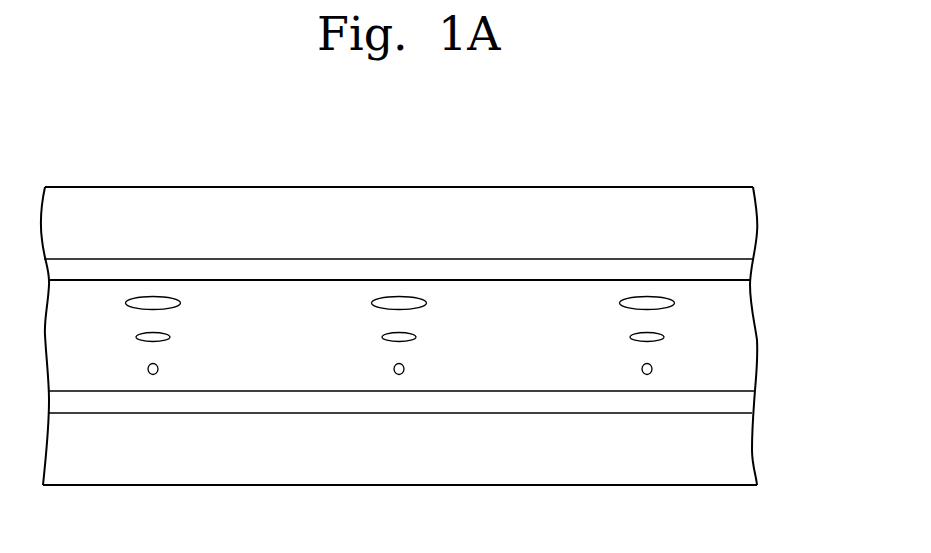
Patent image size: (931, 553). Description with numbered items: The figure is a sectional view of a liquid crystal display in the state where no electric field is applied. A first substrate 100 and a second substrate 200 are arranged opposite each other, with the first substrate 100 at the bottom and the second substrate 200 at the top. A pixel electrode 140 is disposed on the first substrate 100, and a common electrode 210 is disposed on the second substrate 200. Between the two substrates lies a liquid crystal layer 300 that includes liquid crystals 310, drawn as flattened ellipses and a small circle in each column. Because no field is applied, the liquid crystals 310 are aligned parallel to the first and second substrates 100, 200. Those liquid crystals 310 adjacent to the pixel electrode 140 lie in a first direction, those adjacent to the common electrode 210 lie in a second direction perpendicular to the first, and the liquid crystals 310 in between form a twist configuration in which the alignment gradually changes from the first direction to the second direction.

The first substrate 100 is at (741, 451).
The pixel electrode 140 is at (741, 403).
The second substrate 200 is at (741, 223).
The common electrode 210 is at (741, 271).
The liquid crystal layer 300 is at (741, 357).
The liquid crystals 310 is at (660, 302).